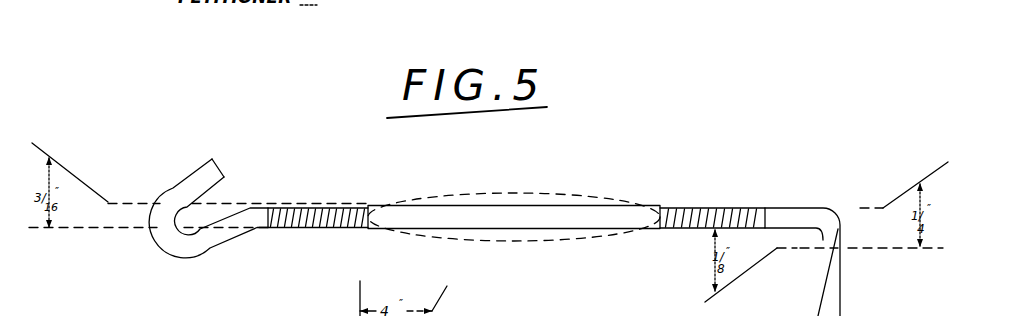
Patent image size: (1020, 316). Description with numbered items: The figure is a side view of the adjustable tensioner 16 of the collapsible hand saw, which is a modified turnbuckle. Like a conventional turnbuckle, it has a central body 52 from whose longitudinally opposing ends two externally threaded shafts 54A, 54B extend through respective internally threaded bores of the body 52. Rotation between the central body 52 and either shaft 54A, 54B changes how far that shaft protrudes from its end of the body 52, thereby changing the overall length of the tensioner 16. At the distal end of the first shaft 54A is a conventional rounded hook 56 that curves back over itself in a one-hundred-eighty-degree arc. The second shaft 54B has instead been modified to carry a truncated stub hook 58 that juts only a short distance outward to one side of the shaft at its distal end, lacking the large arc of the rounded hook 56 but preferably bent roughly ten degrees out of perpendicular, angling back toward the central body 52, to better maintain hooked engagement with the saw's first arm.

The tensioner 16 is at (656, 162).
The central body 52 is at (545, 208).
The first shaft 54A is at (328, 217).
The second shaft 54B is at (700, 207).
The rounded hook 56 is at (182, 195).
The stub hook 58 is at (818, 243).